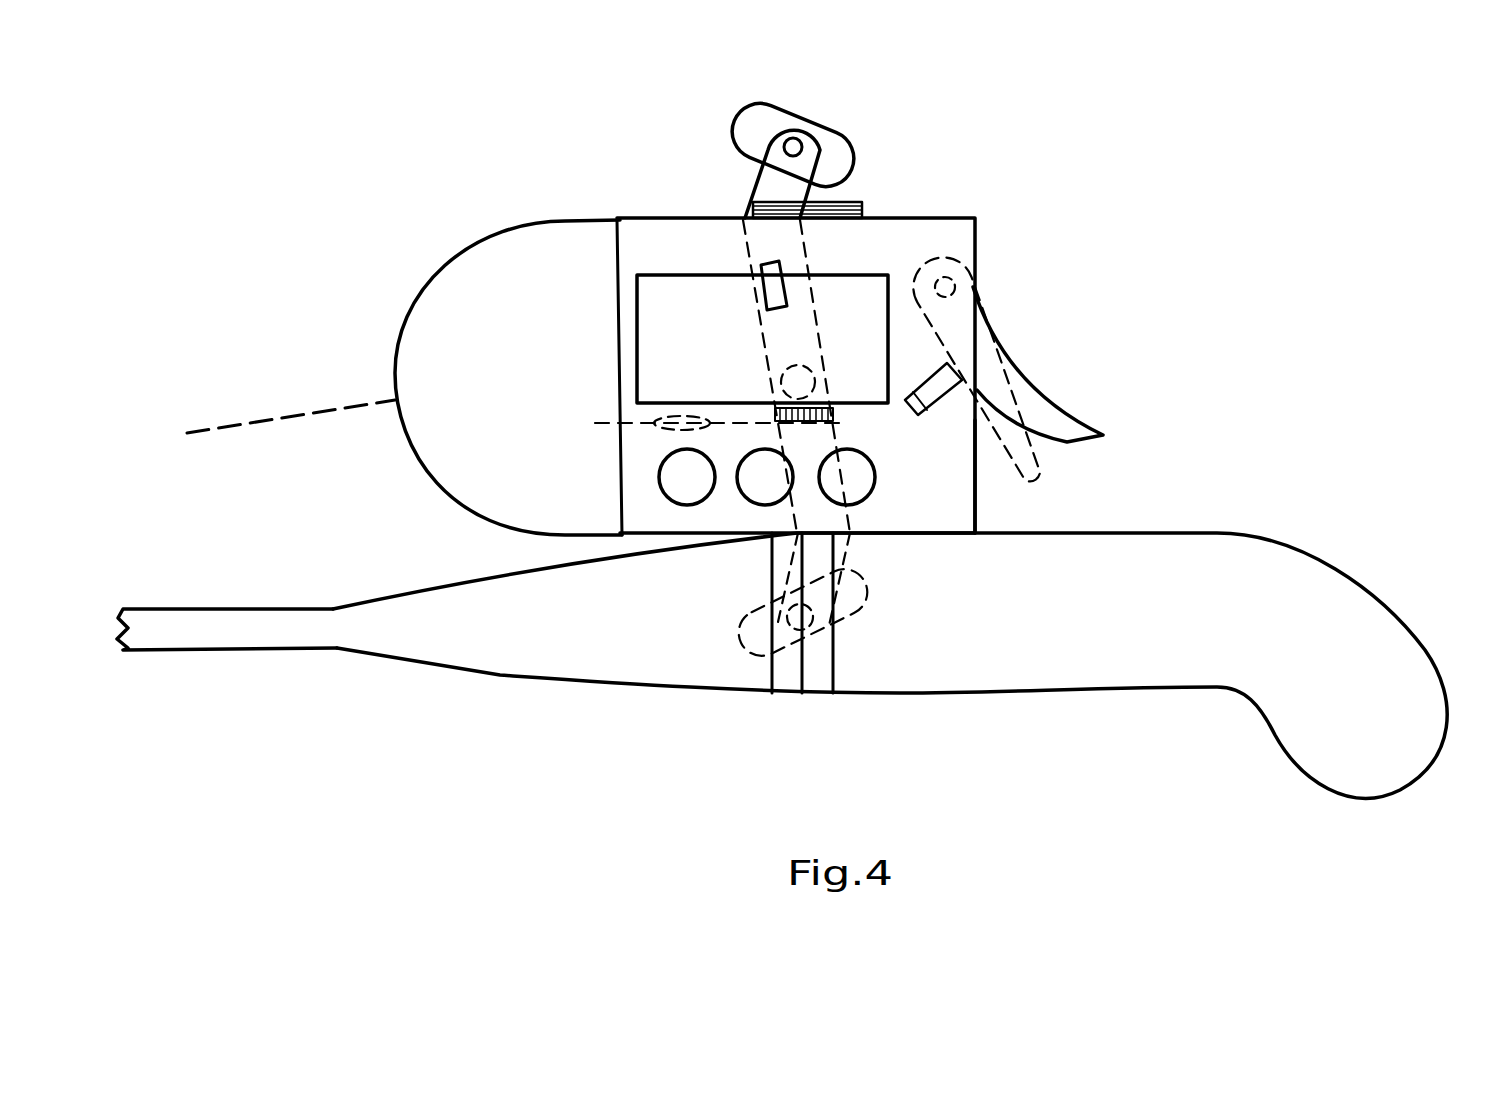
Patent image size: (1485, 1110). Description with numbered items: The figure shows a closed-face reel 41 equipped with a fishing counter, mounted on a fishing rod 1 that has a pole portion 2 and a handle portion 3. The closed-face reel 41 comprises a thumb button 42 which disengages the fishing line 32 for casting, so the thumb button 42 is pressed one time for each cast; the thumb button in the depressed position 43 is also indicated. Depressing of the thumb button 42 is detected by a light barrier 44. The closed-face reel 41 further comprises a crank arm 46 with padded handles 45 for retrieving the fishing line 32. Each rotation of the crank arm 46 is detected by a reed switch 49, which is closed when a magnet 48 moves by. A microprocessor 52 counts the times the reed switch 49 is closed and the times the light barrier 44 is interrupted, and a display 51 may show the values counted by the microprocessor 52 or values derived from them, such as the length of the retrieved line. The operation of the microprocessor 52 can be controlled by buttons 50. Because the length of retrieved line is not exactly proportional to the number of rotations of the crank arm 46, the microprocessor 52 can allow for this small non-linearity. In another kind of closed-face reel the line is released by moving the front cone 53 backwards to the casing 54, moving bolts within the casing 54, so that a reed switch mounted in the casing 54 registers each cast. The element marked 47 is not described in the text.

The fishing rod 1 is at (515, 740).
The pole portion 2 is at (165, 640).
The handle portion 3 is at (1117, 682).
The fishing line 32 is at (276, 422).
The closed-face reel 41 is at (962, 215).
The thumb button 42 is at (1067, 413).
The thumb button in the depressed position 43 is at (1040, 482).
The light barrier 44 is at (962, 373).
The padded handles 45 is at (748, 107).
The crank arm 46 is at (803, 130).
The spring 47 is at (770, 199).
The magnet 48 is at (767, 265).
The reed switch 49 is at (655, 420).
The buttons 50 is at (738, 450).
The display 51 is at (868, 283).
The microprocessor 52 is at (840, 418).
The front cone 53 is at (463, 267).
The casing 54 is at (980, 507).